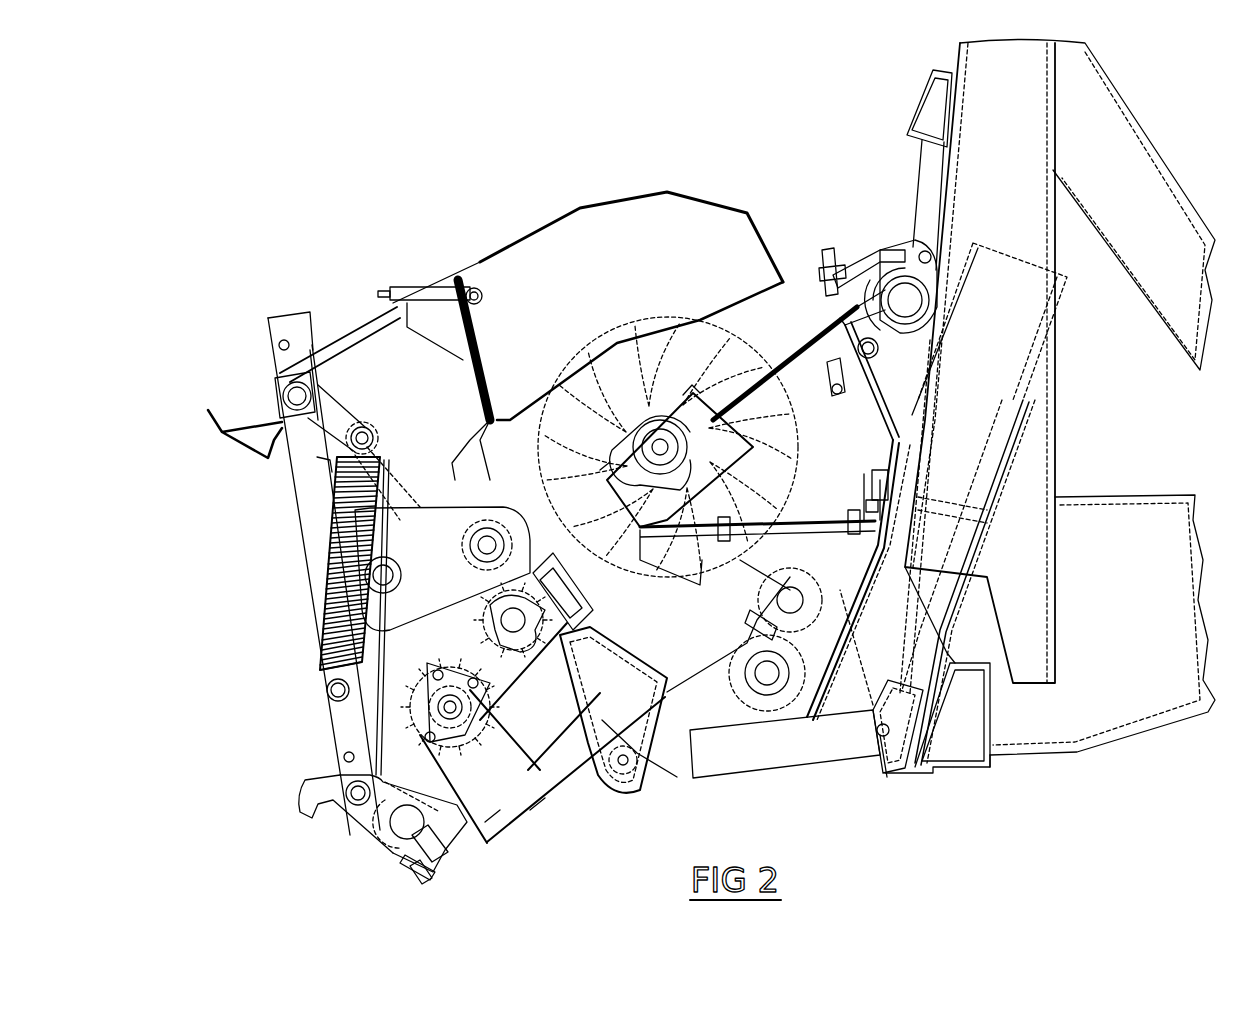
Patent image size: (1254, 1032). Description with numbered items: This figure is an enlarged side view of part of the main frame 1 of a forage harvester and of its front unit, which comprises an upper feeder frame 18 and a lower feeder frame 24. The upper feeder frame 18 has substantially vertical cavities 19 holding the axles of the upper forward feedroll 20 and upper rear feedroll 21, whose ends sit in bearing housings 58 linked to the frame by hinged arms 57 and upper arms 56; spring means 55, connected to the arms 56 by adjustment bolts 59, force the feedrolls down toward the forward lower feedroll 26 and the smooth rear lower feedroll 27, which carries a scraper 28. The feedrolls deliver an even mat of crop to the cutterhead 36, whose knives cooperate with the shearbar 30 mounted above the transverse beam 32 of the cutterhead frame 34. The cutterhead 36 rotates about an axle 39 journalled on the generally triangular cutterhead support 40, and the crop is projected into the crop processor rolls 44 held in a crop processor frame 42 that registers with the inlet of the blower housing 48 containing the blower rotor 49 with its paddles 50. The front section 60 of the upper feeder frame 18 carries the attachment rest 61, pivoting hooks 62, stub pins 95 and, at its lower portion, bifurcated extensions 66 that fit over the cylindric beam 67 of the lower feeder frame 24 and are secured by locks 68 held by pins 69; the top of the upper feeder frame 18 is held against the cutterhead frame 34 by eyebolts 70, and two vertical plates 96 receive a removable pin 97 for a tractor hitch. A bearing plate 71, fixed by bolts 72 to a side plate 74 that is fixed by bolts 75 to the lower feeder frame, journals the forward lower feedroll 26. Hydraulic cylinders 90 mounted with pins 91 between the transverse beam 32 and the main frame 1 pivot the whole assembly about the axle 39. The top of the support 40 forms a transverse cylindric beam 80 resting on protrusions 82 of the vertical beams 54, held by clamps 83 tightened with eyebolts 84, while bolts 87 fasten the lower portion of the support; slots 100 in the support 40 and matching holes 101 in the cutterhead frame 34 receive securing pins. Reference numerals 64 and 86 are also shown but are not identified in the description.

The main frame 1 is at (1174, 751).
The upper feeder frame 18 is at (360, 309).
The vertical cavities 19 is at (305, 488).
The upper forward feedroll 20 is at (312, 578).
The upper rear feedroll 21 is at (490, 520).
The lower feeder frame 24 is at (568, 803).
The forward lower feedroll 26 is at (410, 700).
The rear lower feedroll 27 is at (480, 618).
The scraper 28 is at (550, 560).
The shearbar 30 is at (565, 572).
The transverse beam 32 is at (642, 778).
The cutterhead frame 34 is at (701, 178).
The cutterhead 36 is at (651, 299).
The axle 39 is at (660, 445).
The cutterhead support 40 is at (750, 420).
The crop processor frame 42 is at (730, 705).
The crop processor rolls 44 is at (830, 680).
The blower housing 48 is at (1005, 525).
The blower rotor 49 is at (990, 475).
The paddles 50 is at (1015, 280).
The vertical beams 54 is at (990, 60).
The spring means 55 is at (320, 642).
The upper arms 56 is at (335, 418).
The arms 57 is at (400, 477).
The bearing housings 58 is at (440, 520).
The adjustment bolts 59 is at (368, 430).
The front section 60 is at (300, 500).
The attachment rest 61 is at (210, 420).
The hooks 62 is at (300, 800).
The arm 64 is at (365, 348).
The bifurcated extensions 66 is at (360, 827).
The cylindric beam 67 is at (392, 850).
The locks 68 is at (437, 870).
The pins 69 is at (418, 872).
The eyebolts 70 is at (415, 285).
The bearing plate 71 is at (432, 708).
The bolts 72 is at (418, 742).
The side plate 74 is at (485, 822).
The bolts 75 is at (530, 810).
The cylindric beam 80 is at (903, 276).
The protrusions 82 is at (863, 400).
The clamps 83 is at (850, 276).
The eyebolts 84 is at (824, 250).
The bracket 86 is at (878, 478).
The bolts 87 is at (860, 500).
The hydraulic cylinders 90 is at (750, 760).
The pins 91 is at (623, 766).
The stub pins 95 is at (340, 757).
The vertical plates 96 is at (280, 345).
The removable pin 97 is at (280, 325).
The slots 100 is at (852, 372).
The holes 101 is at (818, 367).